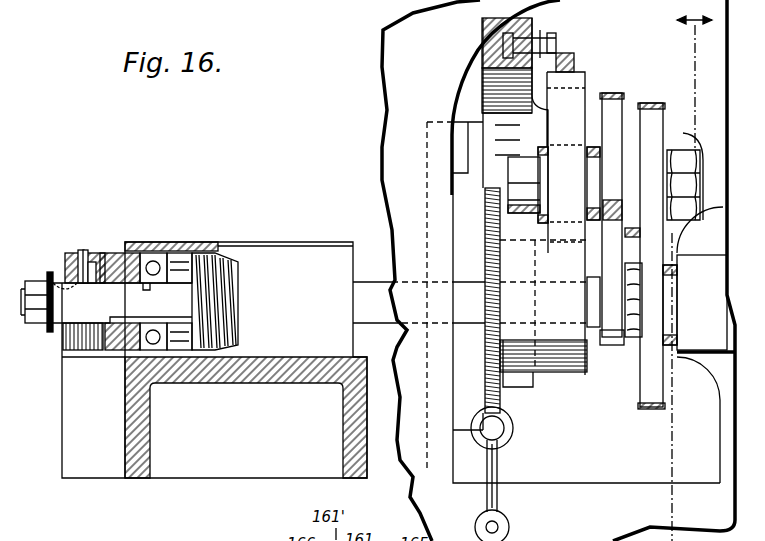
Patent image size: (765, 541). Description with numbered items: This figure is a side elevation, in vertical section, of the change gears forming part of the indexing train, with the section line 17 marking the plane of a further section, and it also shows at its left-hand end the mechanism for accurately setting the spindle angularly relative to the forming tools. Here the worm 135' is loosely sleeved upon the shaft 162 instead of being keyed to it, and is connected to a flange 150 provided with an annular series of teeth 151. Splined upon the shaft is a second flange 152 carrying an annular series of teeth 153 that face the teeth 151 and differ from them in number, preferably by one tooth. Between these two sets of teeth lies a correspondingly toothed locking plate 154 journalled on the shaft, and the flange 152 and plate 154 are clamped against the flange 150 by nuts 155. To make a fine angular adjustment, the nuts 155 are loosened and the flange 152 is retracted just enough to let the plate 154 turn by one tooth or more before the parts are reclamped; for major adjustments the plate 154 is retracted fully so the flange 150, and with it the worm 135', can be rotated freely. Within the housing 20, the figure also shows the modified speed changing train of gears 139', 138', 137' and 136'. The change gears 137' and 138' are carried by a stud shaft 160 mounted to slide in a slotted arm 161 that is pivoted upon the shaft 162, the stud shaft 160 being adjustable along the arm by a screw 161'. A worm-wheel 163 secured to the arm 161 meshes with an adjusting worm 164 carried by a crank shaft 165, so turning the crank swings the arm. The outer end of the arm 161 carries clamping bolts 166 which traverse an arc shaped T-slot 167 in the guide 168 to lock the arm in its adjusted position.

The housing 20 is at (381, 111).
The section line 17- 17 is at (694, 12).
The worm 135' is at (215, 274).
The gear 136' is at (611, 363).
The change gear 137' is at (609, 194).
The change gear 138' is at (656, 232).
The gear 139' is at (637, 427).
The flange 150 is at (97, 251).
The annular series of teeth 151 is at (89, 250).
The flange 152 is at (63, 251).
The annular series of teeth 153 is at (79, 250).
The locking plate 154 is at (84, 250).
The nuts 155 is at (33, 282).
The stud shaft 160 is at (685, 174).
The slotted arm 161 is at (543, 202).
The screw 161' is at (597, 50).
The shaft 162 is at (368, 281).
The worm-wheel 163 is at (500, 397).
The adjusting worm 164 is at (513, 430).
The crank shaft 165 is at (500, 438).
The clamping bolts 166 is at (557, 44).
The arc shaped T-slot 167 is at (490, 47).
The guide 168 is at (490, 88).